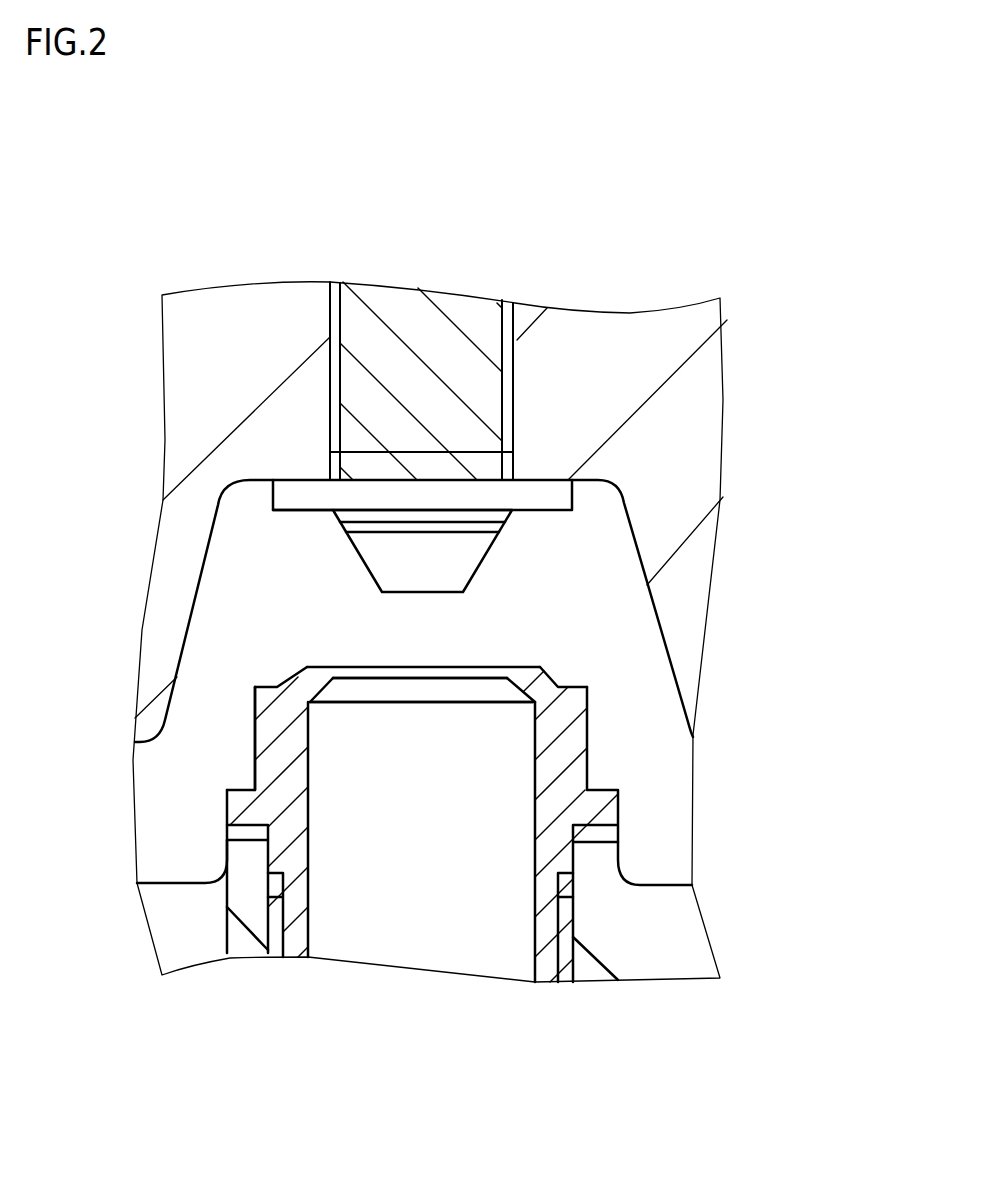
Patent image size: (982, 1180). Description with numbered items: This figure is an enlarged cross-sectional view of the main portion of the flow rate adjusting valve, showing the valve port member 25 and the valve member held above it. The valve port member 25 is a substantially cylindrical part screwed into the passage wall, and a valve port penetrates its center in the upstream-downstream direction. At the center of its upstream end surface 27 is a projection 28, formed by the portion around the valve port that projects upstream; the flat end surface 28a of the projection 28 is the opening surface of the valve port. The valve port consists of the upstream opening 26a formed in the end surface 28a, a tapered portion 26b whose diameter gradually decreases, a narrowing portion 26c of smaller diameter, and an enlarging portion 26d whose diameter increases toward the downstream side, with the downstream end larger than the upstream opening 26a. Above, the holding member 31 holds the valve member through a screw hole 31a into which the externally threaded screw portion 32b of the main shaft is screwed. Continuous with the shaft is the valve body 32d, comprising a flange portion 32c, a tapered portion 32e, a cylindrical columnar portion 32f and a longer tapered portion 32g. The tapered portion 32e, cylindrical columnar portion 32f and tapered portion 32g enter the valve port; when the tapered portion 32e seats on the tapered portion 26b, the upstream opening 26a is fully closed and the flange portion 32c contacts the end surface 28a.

The valve port member 25 is at (255, 738).
The upstream opening 26a is at (400, 666).
The tapered portion 26b is at (530, 672).
The narrowing portion 26c is at (423, 680).
The enlarging portion 26d is at (310, 700).
The upstream end surface 27 is at (277, 684).
The projection 28 is at (550, 667).
The end surface 28a is at (527, 665).
The holding member 31 is at (693, 630).
The screw hole 31a is at (338, 430).
The screw portion 32b is at (414, 313).
The flange portion 32c is at (540, 494).
The valve body 32d is at (435, 560).
The tapered portion 32e is at (275, 513).
The cylindrical columnar portion 32f is at (337, 531).
The tapered portion 32g is at (360, 567).